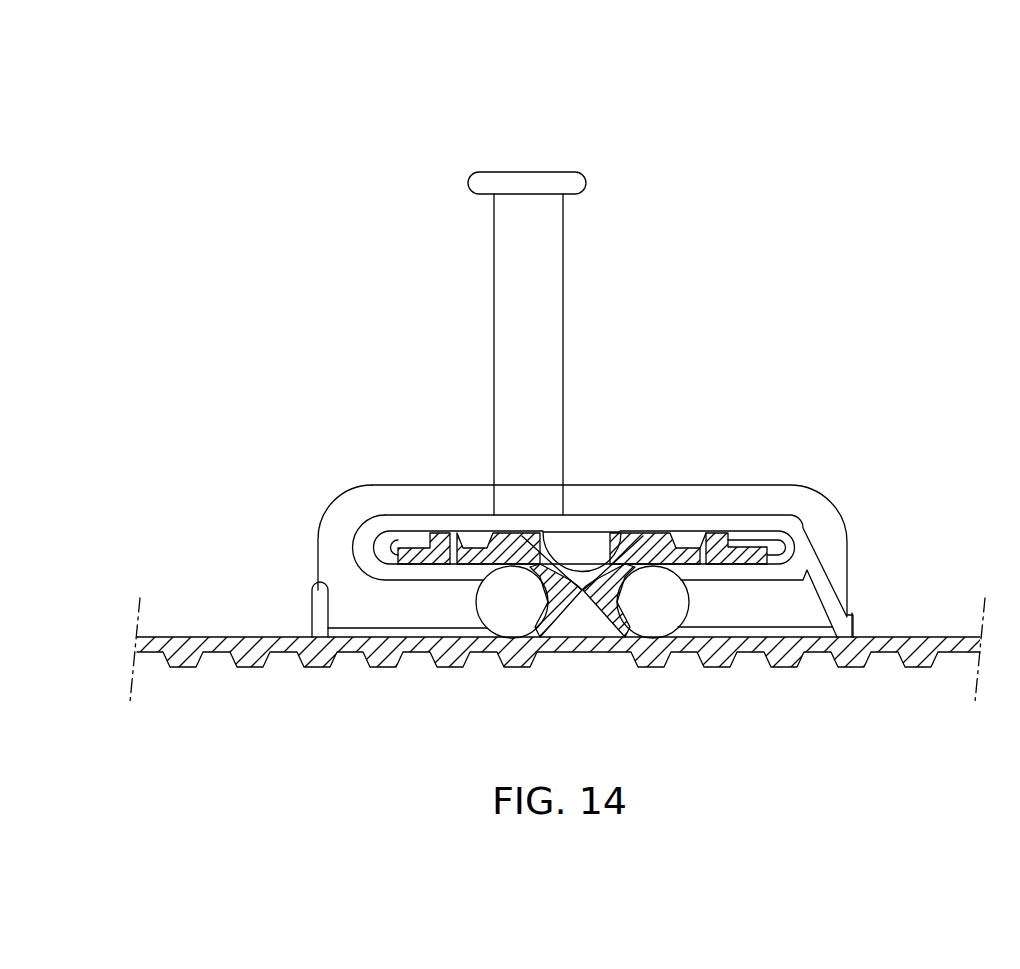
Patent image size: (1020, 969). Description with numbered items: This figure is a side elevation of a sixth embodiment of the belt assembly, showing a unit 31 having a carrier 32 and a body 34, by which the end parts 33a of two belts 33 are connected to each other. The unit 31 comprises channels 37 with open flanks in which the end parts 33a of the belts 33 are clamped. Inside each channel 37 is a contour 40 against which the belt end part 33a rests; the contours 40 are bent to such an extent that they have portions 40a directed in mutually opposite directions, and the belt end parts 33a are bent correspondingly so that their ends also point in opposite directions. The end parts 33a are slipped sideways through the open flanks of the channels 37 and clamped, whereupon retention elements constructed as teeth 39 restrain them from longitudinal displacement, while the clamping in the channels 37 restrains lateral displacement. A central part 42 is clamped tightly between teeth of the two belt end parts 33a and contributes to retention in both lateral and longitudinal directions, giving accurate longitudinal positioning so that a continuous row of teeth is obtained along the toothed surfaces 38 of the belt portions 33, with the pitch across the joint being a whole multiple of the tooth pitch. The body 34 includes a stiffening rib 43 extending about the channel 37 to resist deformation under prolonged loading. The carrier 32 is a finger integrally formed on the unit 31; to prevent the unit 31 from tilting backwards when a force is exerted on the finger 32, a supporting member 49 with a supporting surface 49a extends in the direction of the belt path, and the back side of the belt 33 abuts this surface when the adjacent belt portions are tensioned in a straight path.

The unit 31 is at (633, 308).
The carrier 32 is at (535, 236).
The belt 33 is at (244, 637).
The end part of belt 33a is at (405, 550).
The body 34 is at (590, 487).
The channel 37 is at (365, 530).
The toothed surface 38 is at (248, 662).
The teeth 39 is at (478, 540).
The contour 40 is at (533, 572).
The portion of contour 40a is at (445, 540).
The central part 42 is at (587, 578).
The stiffening rib 43 is at (797, 540).
The supporting member 49 is at (857, 613).
The supporting surface 49a is at (852, 640).